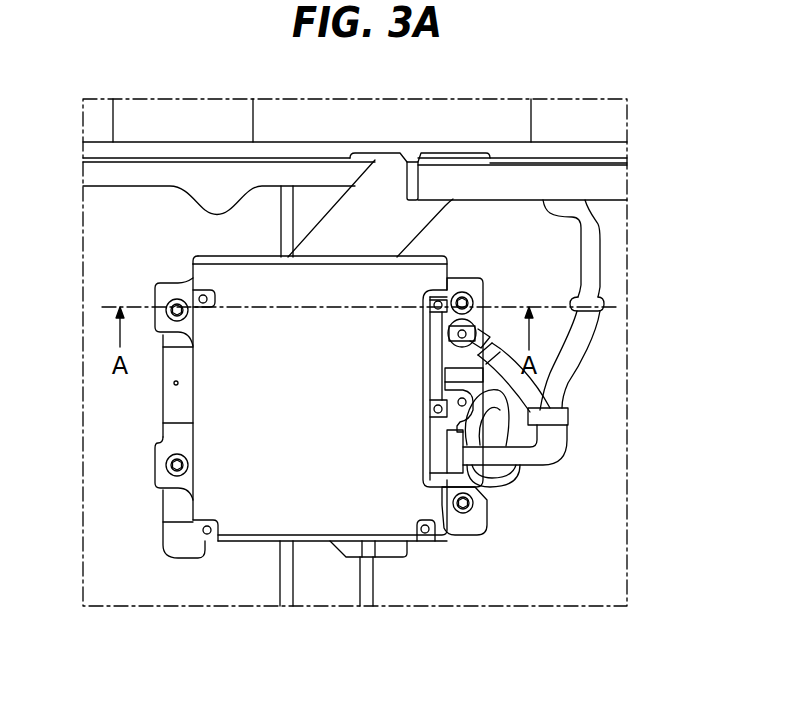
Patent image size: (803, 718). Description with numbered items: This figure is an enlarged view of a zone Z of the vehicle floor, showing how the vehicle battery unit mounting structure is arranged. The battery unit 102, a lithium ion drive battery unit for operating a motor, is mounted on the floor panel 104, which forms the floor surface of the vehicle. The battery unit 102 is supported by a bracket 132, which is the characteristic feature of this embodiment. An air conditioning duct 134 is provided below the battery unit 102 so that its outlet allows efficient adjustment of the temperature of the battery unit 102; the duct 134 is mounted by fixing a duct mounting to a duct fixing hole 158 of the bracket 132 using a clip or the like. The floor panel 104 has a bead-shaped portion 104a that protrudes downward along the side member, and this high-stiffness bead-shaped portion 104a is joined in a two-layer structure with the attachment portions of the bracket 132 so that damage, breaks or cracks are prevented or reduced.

The zone Z is at (594, 99).
The air conditioning duct 134 is at (395, 220).
The battery unit 102 is at (247, 513).
The bracket 132 is at (177, 505).
The duct fixing hole 158 is at (176, 386).
The floor panel 104 is at (438, 607).
The bead-shaped portion 104a is at (332, 582).